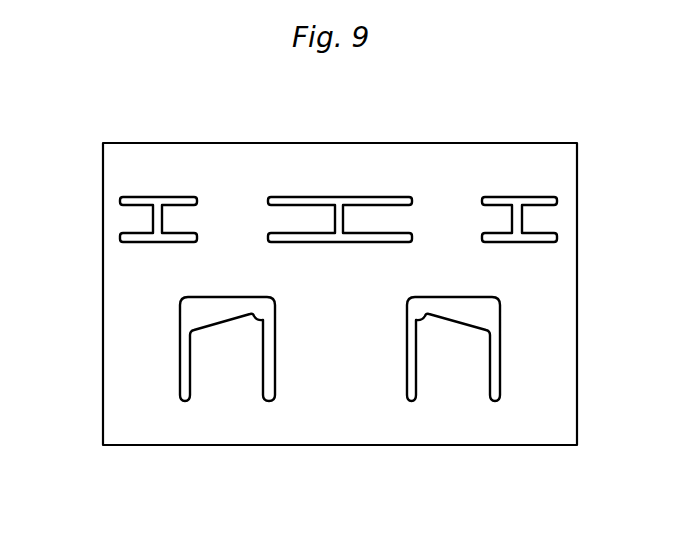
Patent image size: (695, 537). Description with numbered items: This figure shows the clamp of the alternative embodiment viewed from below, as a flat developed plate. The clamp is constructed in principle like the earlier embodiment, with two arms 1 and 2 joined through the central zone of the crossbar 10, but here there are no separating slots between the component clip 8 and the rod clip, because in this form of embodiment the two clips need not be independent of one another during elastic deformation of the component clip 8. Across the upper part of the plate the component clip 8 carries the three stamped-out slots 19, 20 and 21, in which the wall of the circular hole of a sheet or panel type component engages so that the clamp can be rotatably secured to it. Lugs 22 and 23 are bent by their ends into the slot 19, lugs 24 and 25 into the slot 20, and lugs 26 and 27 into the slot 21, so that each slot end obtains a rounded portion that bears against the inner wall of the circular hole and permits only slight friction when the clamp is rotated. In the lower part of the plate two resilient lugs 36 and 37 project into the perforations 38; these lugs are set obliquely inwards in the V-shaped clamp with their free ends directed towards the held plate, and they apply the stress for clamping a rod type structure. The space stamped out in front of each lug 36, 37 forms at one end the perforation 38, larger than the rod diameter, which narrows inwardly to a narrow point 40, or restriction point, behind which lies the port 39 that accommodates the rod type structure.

The arm 1 is at (232, 192).
The arm 2 is at (338, 297).
The component clip 8 is at (338, 297).
The crossbar 10 is at (338, 297).
The slot 19 is at (157, 200).
The slot 20 is at (337, 200).
The slot 21 is at (520, 202).
The lug 22 is at (125, 172).
The lug 23 is at (153, 172).
The lug 24 is at (331, 172).
The lug 25 is at (342, 172).
The lug 26 is at (526, 172).
The lug 27 is at (557, 172).
The resilient lug 36 is at (220, 367).
The resilient lug 37 is at (450, 387).
The perforation 38 is at (335, 376).
The port 39 is at (335, 376).
The narrow point 40 is at (344, 376).